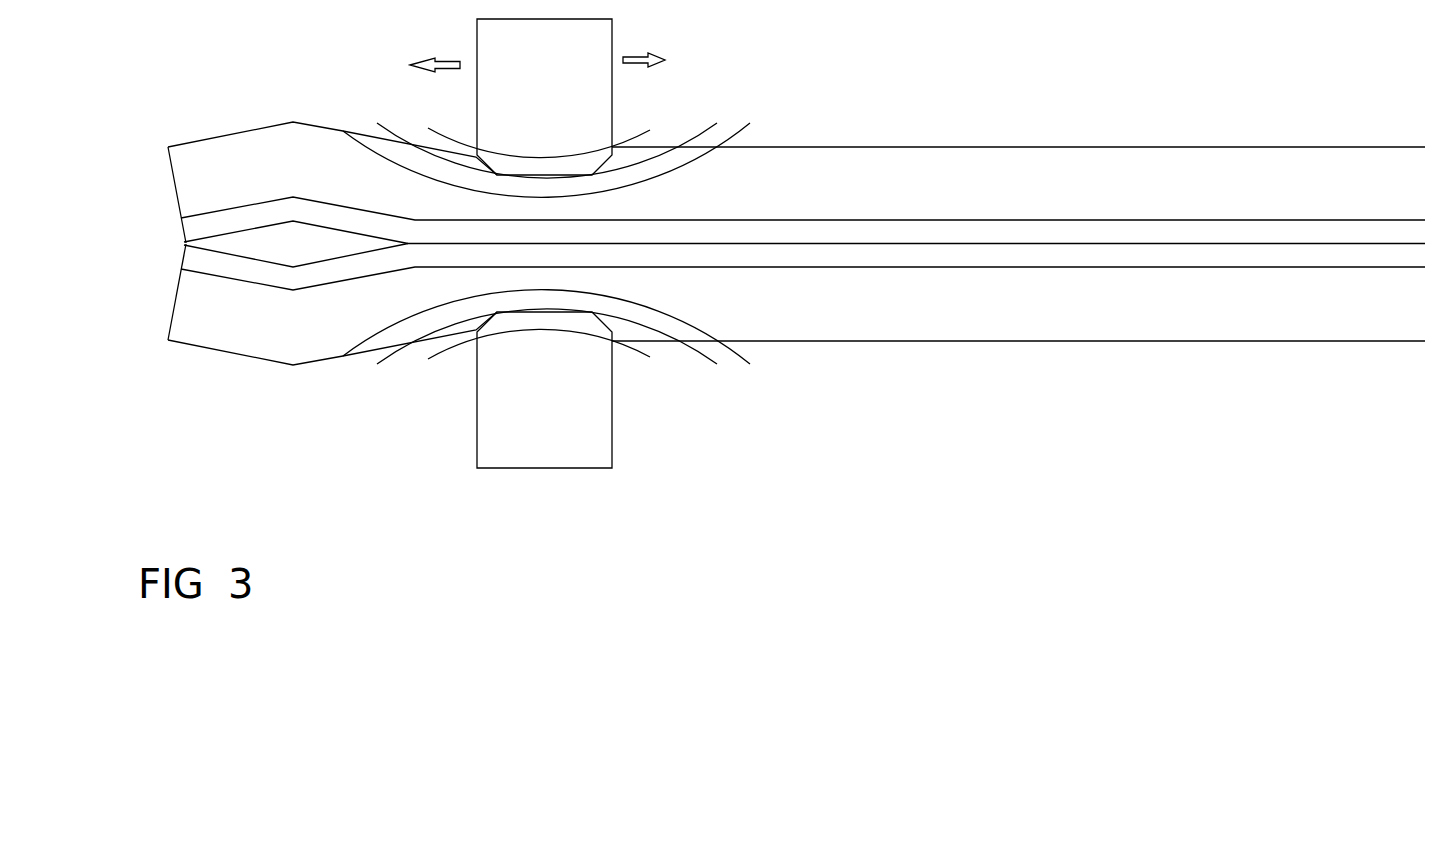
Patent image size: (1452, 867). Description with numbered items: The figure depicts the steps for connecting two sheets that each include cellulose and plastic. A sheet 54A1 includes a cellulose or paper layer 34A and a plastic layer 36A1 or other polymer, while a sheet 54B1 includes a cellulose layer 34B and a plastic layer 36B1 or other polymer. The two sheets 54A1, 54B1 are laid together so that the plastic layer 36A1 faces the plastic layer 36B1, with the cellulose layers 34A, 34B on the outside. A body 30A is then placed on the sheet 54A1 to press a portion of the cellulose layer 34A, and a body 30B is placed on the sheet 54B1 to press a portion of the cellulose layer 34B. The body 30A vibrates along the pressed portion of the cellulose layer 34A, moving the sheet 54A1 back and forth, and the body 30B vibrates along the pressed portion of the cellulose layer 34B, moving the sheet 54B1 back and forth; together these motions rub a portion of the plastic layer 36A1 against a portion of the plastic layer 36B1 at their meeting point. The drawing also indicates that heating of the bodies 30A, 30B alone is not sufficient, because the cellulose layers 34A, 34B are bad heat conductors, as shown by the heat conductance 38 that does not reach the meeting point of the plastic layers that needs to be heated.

The body 30A is at (563, 94).
The body 30B is at (566, 428).
The cellulose layer 34A is at (1005, 162).
The cellulose layer 34B is at (943, 322).
The plastic layer 36A1 is at (1077, 232).
The plastic layer 36B1 is at (1043, 259).
The heat conductance 38 is at (546, 249).
The sheet 54A1 is at (140, 191).
The sheet 54B1 is at (140, 289).